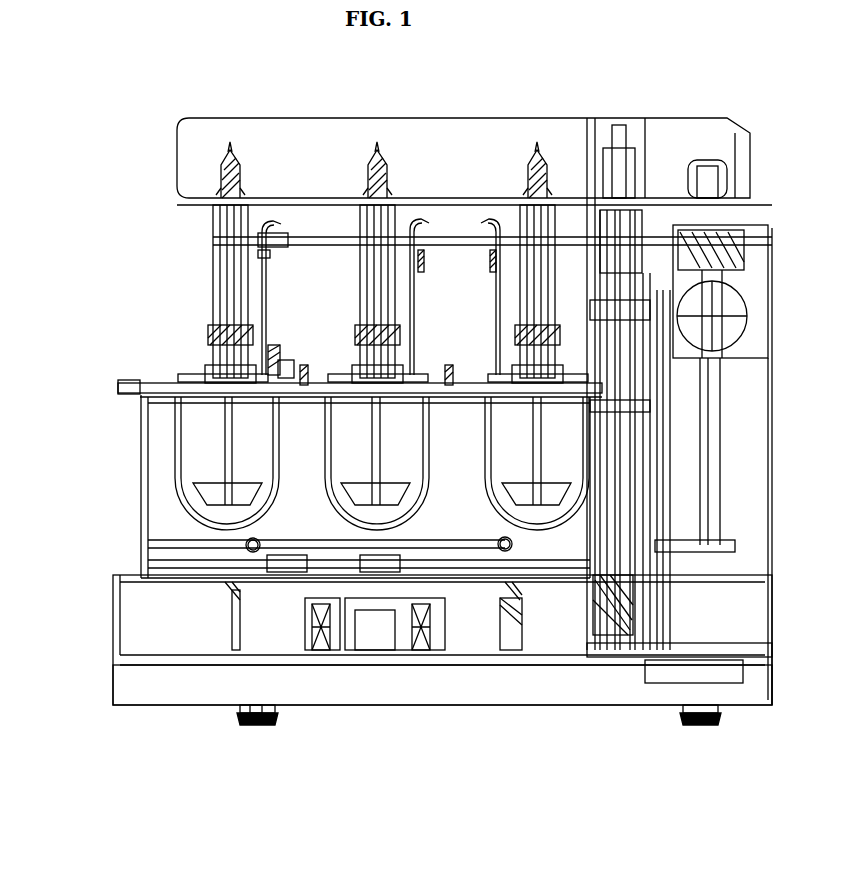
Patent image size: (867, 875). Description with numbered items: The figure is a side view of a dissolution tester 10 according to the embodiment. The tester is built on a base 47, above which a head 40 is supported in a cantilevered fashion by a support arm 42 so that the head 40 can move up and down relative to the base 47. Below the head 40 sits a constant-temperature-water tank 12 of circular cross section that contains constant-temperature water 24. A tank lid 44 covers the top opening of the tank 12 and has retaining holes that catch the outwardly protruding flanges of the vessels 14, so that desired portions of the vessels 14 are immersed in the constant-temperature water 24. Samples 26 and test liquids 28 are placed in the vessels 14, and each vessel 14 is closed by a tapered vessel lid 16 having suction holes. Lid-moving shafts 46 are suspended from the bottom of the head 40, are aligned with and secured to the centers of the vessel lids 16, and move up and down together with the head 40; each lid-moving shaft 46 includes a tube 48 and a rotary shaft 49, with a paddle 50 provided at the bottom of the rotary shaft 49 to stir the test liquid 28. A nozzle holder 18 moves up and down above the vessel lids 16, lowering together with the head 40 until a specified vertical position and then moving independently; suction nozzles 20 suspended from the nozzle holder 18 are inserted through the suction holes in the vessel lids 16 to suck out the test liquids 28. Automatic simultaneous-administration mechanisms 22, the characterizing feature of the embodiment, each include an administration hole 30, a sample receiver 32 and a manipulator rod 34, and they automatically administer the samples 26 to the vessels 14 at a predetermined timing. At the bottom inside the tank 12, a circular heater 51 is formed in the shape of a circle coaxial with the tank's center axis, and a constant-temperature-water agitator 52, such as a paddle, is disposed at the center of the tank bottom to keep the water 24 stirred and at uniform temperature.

The dissolution tester 10 is at (556, 98).
The constant-temperature-water tank 12 is at (145, 460).
The vessels 14 is at (180, 403).
The vessel lids 16 is at (192, 380).
The nozzle holder 18 is at (282, 240).
The suction nozzles 20 is at (264, 293).
The automatic simultaneous-administration mechanisms 22 is at (324, 327).
The constant-temperature water 24 is at (545, 550).
The samples 26 is at (271, 343).
The test liquids 28 is at (195, 468).
The administration hole 30 is at (190, 498).
The sample receiver 32 is at (283, 365).
The manipulator rod 34 is at (268, 255).
The head 40 is at (177, 152).
The support arm 42 is at (736, 225).
The tank lid 44 is at (135, 385).
The lid-moving shafts 46 is at (215, 222).
The base 47 is at (143, 686).
The tube 48 is at (213, 240).
The rotary shaft 49 is at (142, 432).
The paddle 50 is at (245, 546).
The circular heater 51 is at (379, 544).
The constant-temperature-water agitator 52 is at (190, 562).